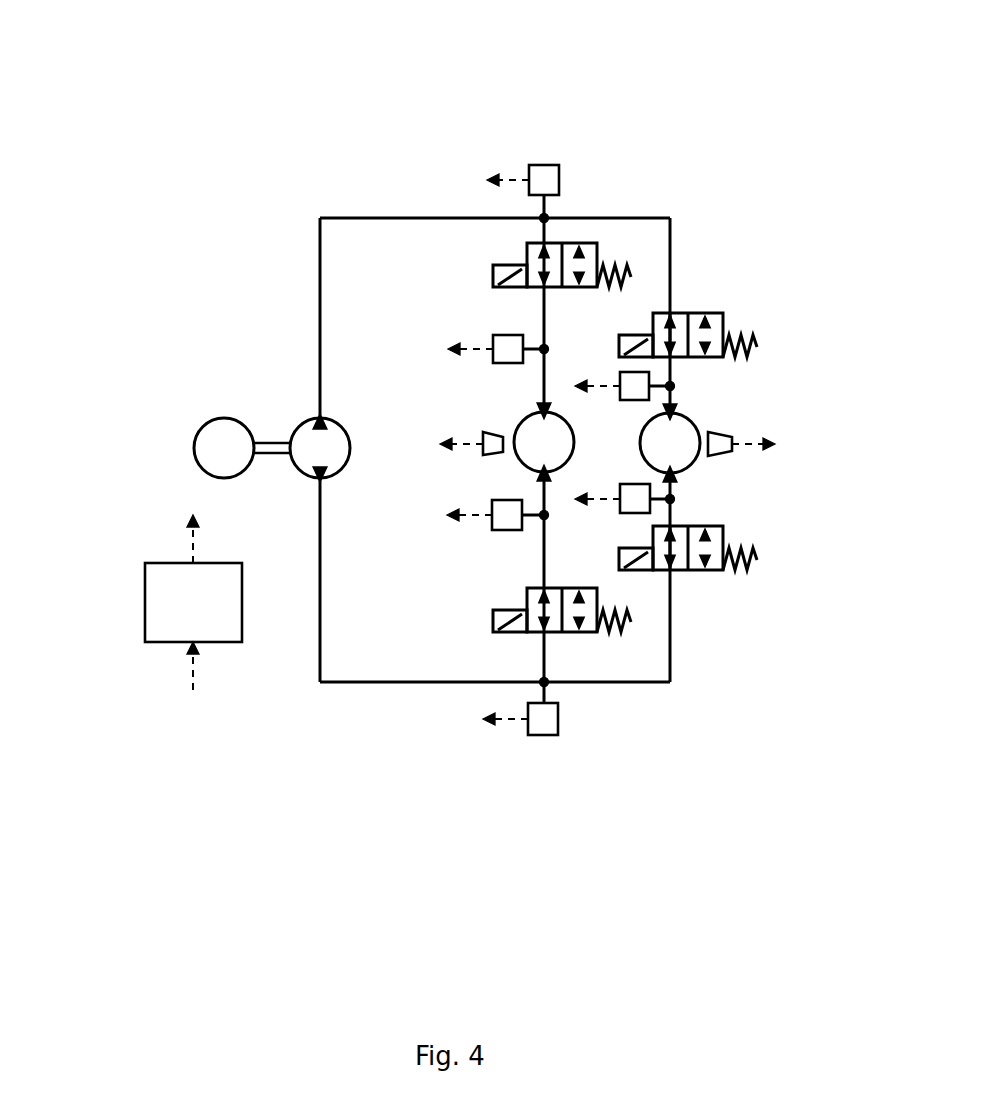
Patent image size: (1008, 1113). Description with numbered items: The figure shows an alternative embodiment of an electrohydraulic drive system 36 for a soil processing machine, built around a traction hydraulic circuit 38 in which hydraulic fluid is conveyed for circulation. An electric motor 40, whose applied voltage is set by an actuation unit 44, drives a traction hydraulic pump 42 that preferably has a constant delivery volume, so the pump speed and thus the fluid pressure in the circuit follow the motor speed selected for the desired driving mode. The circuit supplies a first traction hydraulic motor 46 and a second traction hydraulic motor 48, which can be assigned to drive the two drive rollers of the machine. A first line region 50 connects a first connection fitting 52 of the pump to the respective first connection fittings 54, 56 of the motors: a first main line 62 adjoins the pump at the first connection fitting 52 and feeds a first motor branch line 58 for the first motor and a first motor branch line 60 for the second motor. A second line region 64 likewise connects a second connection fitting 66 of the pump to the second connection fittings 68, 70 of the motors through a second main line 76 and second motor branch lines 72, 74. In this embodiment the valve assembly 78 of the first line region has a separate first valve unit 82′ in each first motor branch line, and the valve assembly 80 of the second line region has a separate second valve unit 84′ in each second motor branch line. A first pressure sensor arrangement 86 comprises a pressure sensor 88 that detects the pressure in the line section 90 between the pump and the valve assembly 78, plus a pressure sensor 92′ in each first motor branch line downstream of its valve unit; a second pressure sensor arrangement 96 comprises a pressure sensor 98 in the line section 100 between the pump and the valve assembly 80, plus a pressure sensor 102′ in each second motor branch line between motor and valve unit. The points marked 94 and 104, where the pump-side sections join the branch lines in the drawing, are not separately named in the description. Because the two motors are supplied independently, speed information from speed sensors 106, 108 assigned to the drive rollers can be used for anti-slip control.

The electrohydraulic drive system 36 is at (762, 78).
The traction hydraulic circuit 38 is at (355, 160).
The electric motor 40 is at (192, 440).
The traction hydraulic pump 42 is at (298, 449).
The actuation unit 44 is at (145, 600).
The first traction hydraulic motor 46 is at (553, 432).
The second traction hydraulic motor 48 is at (713, 450).
The first line region 50 is at (522, 449).
The first connection fitting 52 is at (328, 418).
The first connection fitting 54 is at (540, 412).
The first connection fitting 56 is at (676, 408).
The first motor branch line 58 is at (542, 303).
The first motor branch line 60 is at (662, 214).
The first main line 62 is at (322, 296).
The second line region 64 is at (318, 676).
The second connection fitting 66 is at (324, 481).
The second connection fitting 68 is at (542, 478).
The second connection fitting 70 is at (677, 478).
The second motor branch line 72 is at (542, 553).
The second motor branch line 74 is at (672, 679).
The second main line 76 is at (320, 653).
The valve assembly 78 is at (706, 256).
The valve assembly 80 is at (730, 633).
The first valve unit 82′ is at (525, 243).
The second valve unit 84′ is at (525, 632).
The first pressure sensor arrangement 86 is at (507, 135).
The pressure sensor 88 is at (540, 165).
The line section 90 is at (318, 336).
The pressure sensor 92′ is at (493, 365).
The upper node 94 is at (576, 210).
The second pressure sensor arrangement 96 is at (576, 762).
The pressure sensor 98 is at (528, 735).
The line section 100 is at (318, 563).
The pressure sensor 102′ is at (492, 527).
The lower node 104 is at (582, 688).
The speed sensor 106 is at (483, 452).
The speed sensor 108 is at (734, 432).